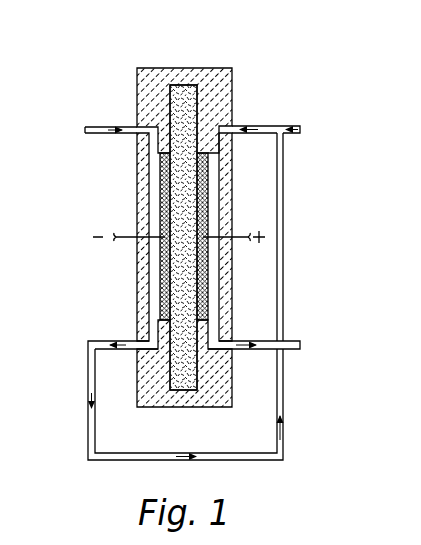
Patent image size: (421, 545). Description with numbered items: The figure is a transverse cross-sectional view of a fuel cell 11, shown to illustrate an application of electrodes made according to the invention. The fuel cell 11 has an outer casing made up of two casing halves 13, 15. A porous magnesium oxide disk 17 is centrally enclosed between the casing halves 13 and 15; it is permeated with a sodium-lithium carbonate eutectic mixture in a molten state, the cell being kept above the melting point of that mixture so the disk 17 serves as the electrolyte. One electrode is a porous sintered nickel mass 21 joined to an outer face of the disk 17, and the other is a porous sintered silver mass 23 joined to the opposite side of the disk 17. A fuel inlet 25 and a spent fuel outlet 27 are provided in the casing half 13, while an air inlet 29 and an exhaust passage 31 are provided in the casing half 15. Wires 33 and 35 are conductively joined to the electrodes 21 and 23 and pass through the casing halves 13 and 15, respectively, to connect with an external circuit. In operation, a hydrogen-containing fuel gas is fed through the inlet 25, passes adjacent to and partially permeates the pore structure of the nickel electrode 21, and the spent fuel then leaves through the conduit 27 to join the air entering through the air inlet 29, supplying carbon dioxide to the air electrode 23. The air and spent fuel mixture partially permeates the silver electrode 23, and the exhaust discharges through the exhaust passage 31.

The fuel cell 11 is at (244, 67).
The casing half 13 is at (162, 408).
The casing half 15 is at (215, 408).
The porous magnesium oxide disk 17 is at (190, 95).
The porous sintered nickel mass 21 is at (162, 180).
The porous sintered silver mass 23 is at (206, 180).
The fuel inlet 25 is at (143, 126).
The spent fuel outlet 27 is at (157, 333).
The air inlet 29 is at (222, 126).
The exhaust passage 31 is at (225, 342).
The wire 33 is at (115, 240).
The wire 35 is at (250, 241).